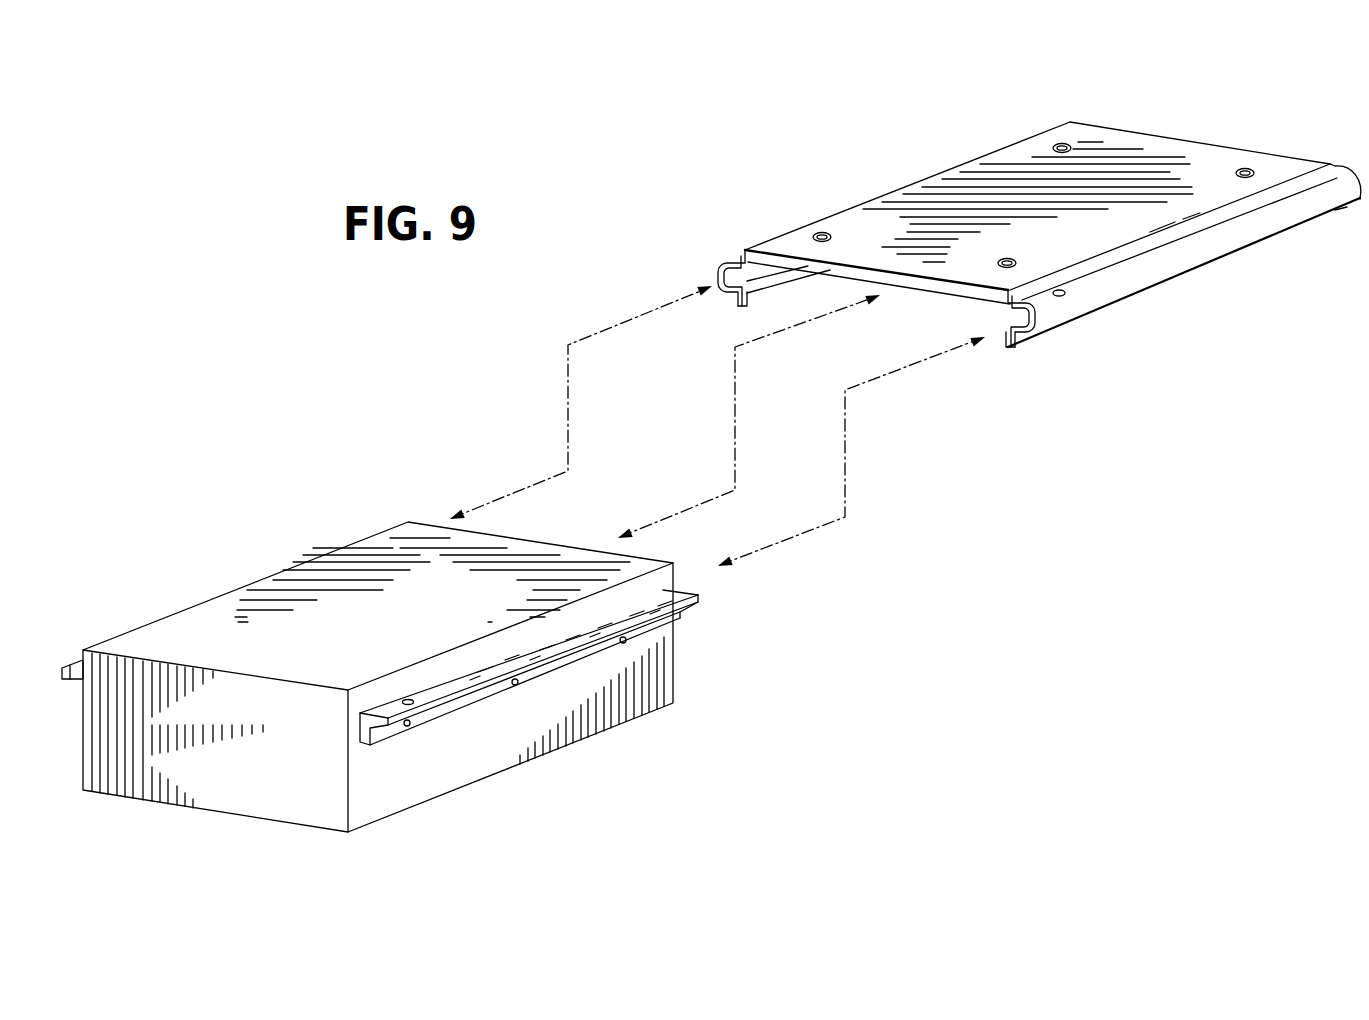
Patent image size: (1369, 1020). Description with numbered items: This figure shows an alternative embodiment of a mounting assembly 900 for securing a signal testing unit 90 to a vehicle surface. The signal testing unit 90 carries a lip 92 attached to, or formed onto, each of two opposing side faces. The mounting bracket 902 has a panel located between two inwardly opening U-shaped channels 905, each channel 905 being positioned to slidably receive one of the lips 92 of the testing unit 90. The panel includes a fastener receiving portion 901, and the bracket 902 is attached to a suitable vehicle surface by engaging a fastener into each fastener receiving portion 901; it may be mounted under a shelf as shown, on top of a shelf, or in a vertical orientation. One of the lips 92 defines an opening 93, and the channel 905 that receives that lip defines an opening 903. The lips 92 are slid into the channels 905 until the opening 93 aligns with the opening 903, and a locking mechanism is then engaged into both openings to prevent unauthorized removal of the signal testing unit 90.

The mounting assembly 900 is at (556, 206).
The signal testing unit 90 is at (386, 628).
The lip 92 is at (697, 626).
The opening 93 is at (409, 690).
The mounting bracket 902 is at (967, 136).
The fastener receiving portion 901 is at (1246, 154).
The opening 903 is at (1074, 304).
The U-shaped channel 905 is at (756, 284).